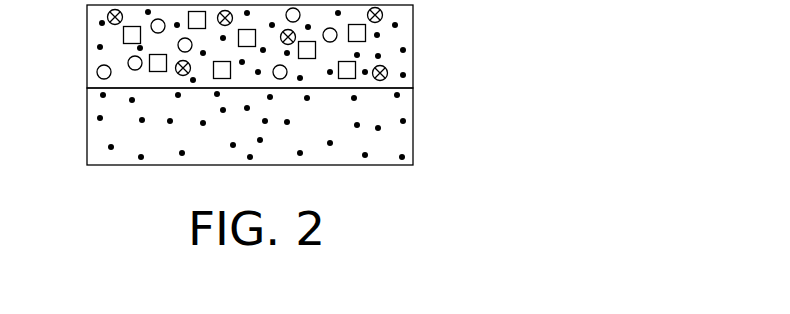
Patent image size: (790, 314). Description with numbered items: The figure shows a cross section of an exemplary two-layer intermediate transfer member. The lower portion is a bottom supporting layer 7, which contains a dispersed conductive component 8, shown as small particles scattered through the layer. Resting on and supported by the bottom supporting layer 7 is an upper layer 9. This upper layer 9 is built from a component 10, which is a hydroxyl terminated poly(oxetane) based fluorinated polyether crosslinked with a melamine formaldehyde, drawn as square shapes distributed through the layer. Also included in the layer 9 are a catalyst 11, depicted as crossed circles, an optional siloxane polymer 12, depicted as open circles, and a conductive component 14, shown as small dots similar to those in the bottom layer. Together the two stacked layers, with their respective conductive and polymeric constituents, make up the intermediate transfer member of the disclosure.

The bottom supporting layer 7 is at (413, 130).
The conductive component 8 is at (142, 120).
The layer 9 is at (413, 39).
The component 10 is at (132, 35).
The catalyst 11 is at (382, 15).
The siloxane polymer 12 is at (135, 63).
The conductive component 14 is at (378, 56).